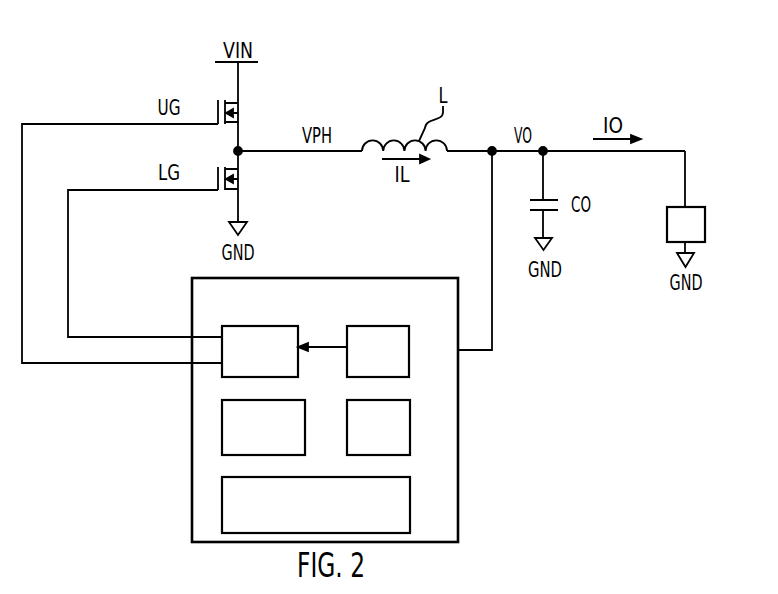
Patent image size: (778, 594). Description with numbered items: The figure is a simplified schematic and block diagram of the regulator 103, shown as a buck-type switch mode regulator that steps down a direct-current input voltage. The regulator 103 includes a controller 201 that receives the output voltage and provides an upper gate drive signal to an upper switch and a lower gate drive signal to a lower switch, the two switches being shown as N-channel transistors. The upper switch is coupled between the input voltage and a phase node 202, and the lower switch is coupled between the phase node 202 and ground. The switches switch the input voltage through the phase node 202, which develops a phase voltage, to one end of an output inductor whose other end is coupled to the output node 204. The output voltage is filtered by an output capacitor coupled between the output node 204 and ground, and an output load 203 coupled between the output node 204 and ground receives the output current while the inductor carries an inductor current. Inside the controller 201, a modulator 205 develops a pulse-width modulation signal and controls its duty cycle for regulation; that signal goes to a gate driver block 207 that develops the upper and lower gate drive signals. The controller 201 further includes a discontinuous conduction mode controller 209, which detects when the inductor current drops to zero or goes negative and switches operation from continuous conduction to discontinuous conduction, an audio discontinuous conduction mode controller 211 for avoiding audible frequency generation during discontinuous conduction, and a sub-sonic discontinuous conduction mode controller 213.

The regulator 103 is at (490, 75).
The phase node 202 is at (240, 150).
The output node 204 is at (492, 148).
The output load 203 is at (697, 207).
The controller 201 is at (367, 278).
The gate driver block 207 is at (260, 326).
The modulator 205 is at (388, 326).
The audio DCM controller 211 is at (249, 451).
The discontinuous conduction mode controller 209 is at (364, 451).
The sub-sonic DCM controller 213 is at (302, 528).